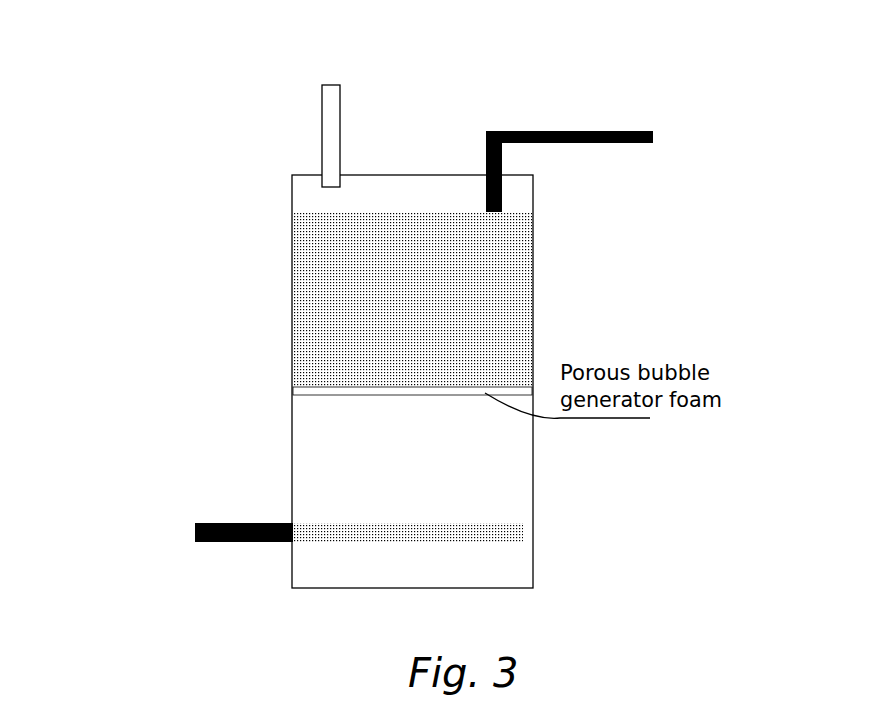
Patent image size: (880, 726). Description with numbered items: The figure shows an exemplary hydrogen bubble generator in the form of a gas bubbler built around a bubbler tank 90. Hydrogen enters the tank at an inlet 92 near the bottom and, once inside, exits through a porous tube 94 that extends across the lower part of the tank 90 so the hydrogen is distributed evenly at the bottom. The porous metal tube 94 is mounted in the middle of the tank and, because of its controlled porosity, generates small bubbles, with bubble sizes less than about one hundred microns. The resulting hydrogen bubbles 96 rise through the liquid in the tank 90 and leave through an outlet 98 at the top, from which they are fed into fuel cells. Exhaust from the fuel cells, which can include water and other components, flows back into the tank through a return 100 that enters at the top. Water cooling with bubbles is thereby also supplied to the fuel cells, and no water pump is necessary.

The bubbler tank 90 is at (533, 277).
The hydrogen inlet 92 is at (215, 541).
The porous tube 94 is at (480, 535).
The hydrogen bubbles 96 is at (358, 310).
The outlet 98 is at (340, 125).
The return 100 is at (674, 165).